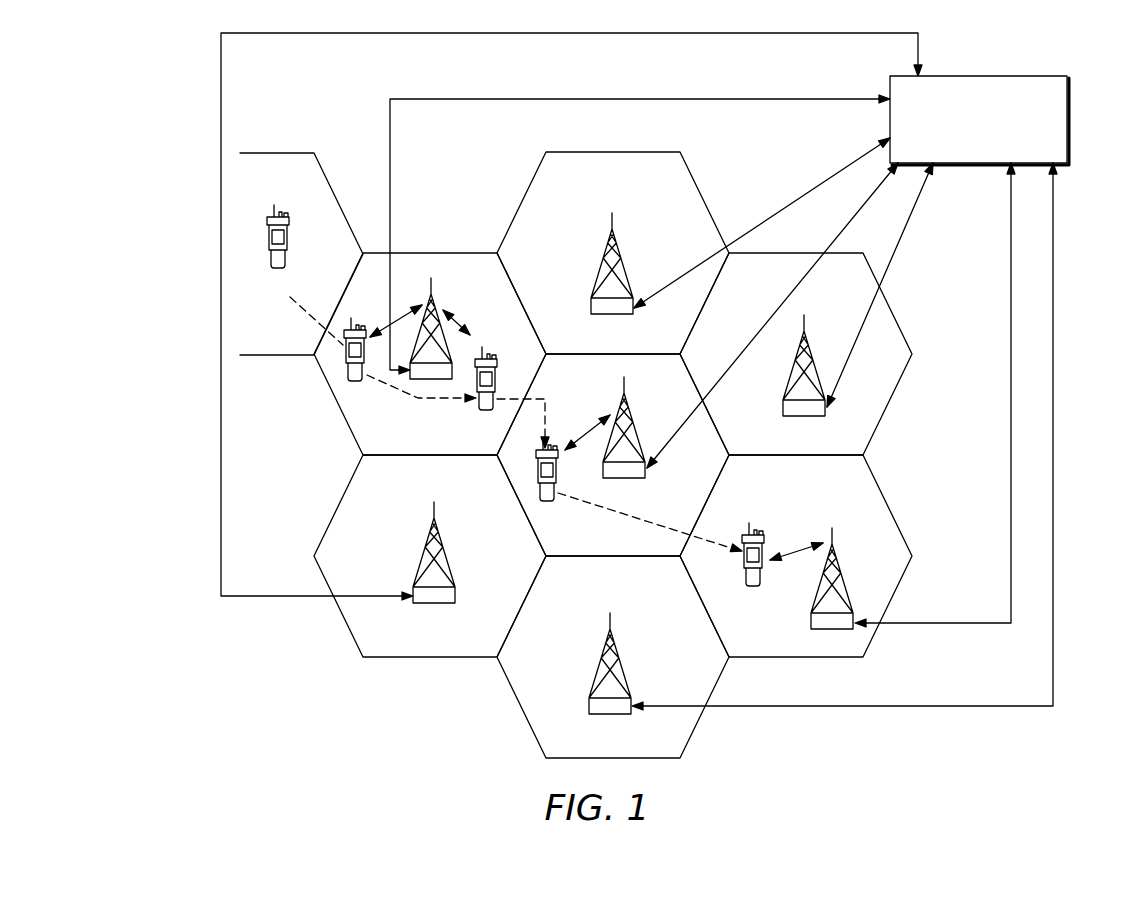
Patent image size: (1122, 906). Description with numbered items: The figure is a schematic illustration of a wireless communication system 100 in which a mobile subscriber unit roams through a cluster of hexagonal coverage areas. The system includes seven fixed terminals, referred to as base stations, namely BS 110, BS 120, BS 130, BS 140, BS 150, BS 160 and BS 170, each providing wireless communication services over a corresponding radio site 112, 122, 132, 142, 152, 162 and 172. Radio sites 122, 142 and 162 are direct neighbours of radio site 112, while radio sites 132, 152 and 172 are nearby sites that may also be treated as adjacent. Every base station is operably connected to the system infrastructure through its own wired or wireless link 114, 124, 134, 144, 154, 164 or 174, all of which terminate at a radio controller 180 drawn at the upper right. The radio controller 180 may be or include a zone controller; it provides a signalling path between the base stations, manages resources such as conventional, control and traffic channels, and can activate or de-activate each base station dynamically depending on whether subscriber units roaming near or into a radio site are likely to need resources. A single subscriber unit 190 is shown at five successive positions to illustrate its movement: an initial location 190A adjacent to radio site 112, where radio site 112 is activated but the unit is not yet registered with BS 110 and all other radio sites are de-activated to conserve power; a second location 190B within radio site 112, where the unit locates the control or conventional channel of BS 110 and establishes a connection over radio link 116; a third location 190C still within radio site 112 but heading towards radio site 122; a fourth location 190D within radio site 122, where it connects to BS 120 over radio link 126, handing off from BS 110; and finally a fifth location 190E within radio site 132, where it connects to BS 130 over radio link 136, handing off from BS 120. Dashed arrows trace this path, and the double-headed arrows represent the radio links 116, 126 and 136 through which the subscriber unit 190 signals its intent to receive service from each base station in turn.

The wireless communication system 100 is at (141, 101).
The base station 110 is at (431, 292).
The radio site 112 is at (430, 252).
The link 114 is at (391, 154).
The radio link 116 is at (385, 328).
The base station 120 is at (645, 420).
The radio site 122 is at (702, 505).
The link 124 is at (848, 225).
The radio link 126 is at (592, 432).
The base station 130 is at (847, 561).
The radio site 132 is at (870, 650).
The link 134 is at (1011, 462).
The radio link 136 is at (805, 546).
The base station 140 is at (446, 545).
The radio site 142 is at (372, 658).
The link 144 is at (221, 479).
The base station 150 is at (622, 652).
The radio site 152 is at (522, 706).
The link 154 is at (1053, 662).
The base station 160 is at (620, 245).
The radio site 162 is at (612, 152).
The link 164 is at (819, 184).
The base station 170 is at (790, 380).
The radio site 172 is at (895, 395).
The link 174 is at (905, 228).
The radio controller 180 is at (1033, 76).
The subscriber unit 190 is at (516, 409).
The initial location 190A is at (308, 237).
The second location 190B is at (318, 408).
The third location 190C is at (514, 358).
The fourth location 190D is at (558, 465).
The fifth location 190E is at (722, 563).